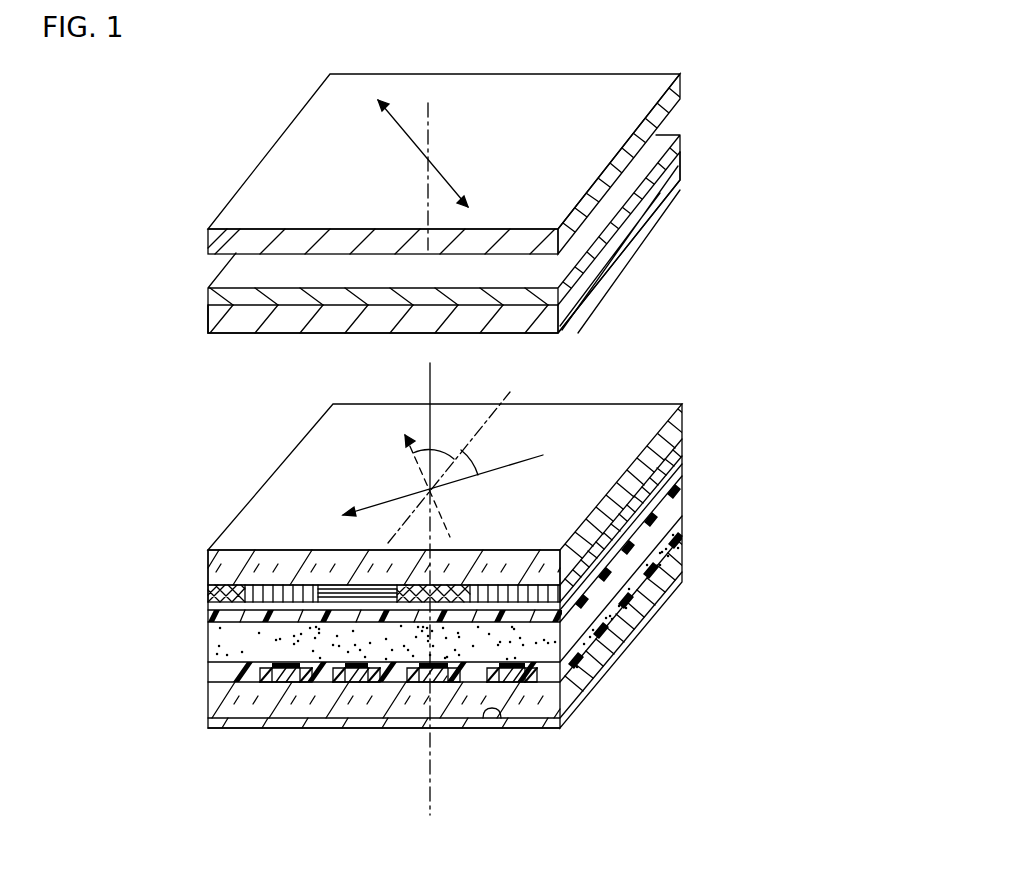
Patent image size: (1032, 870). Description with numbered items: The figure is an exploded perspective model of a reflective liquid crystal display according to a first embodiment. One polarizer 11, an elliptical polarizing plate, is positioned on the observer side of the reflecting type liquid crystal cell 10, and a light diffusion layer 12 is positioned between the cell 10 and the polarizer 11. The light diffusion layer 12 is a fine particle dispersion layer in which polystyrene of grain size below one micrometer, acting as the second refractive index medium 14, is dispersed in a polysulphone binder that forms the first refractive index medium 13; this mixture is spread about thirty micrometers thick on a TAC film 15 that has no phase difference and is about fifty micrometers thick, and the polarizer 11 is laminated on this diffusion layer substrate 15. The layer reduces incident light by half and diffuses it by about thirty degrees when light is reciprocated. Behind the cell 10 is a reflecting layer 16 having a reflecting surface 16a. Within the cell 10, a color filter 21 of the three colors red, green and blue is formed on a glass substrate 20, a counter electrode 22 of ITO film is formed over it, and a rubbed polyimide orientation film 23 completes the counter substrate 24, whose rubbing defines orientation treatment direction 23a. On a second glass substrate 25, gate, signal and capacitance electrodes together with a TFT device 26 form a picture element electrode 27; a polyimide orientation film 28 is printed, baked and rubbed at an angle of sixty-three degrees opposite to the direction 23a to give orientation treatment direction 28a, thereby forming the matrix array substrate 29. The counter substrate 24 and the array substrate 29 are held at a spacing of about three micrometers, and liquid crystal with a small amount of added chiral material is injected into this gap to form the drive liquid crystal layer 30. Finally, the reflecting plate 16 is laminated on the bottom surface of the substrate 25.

The reflecting type liquid crystal cell 10 is at (240, 487).
The polarizer 11 is at (259, 146).
The light diffusion layer 12 is at (512, 197).
The first refractive index medium 13 is at (680, 170).
The second refractive index medium 14 is at (508, 232).
The TAC film 15 is at (680, 138).
The reflecting layer 16 is at (532, 728).
The reflecting surface 16a is at (481, 718).
The substrate 20 is at (216, 565).
The color filter 21 is at (214, 596).
The counter electrode 22 is at (210, 608).
The orientation film 23 is at (233, 620).
The orientation treatment direction 23a is at (440, 453).
The counter substrate 24 is at (384, 548).
The substrate 25 is at (233, 710).
The TFT device 26 is at (398, 726).
The picture element electrode 27 is at (277, 682).
The orientation film 28 is at (217, 673).
The orientation treatment direction 28a is at (453, 515).
The matrix array substrate 29 is at (352, 748).
The drive liquid crystal layer 30 is at (675, 505).